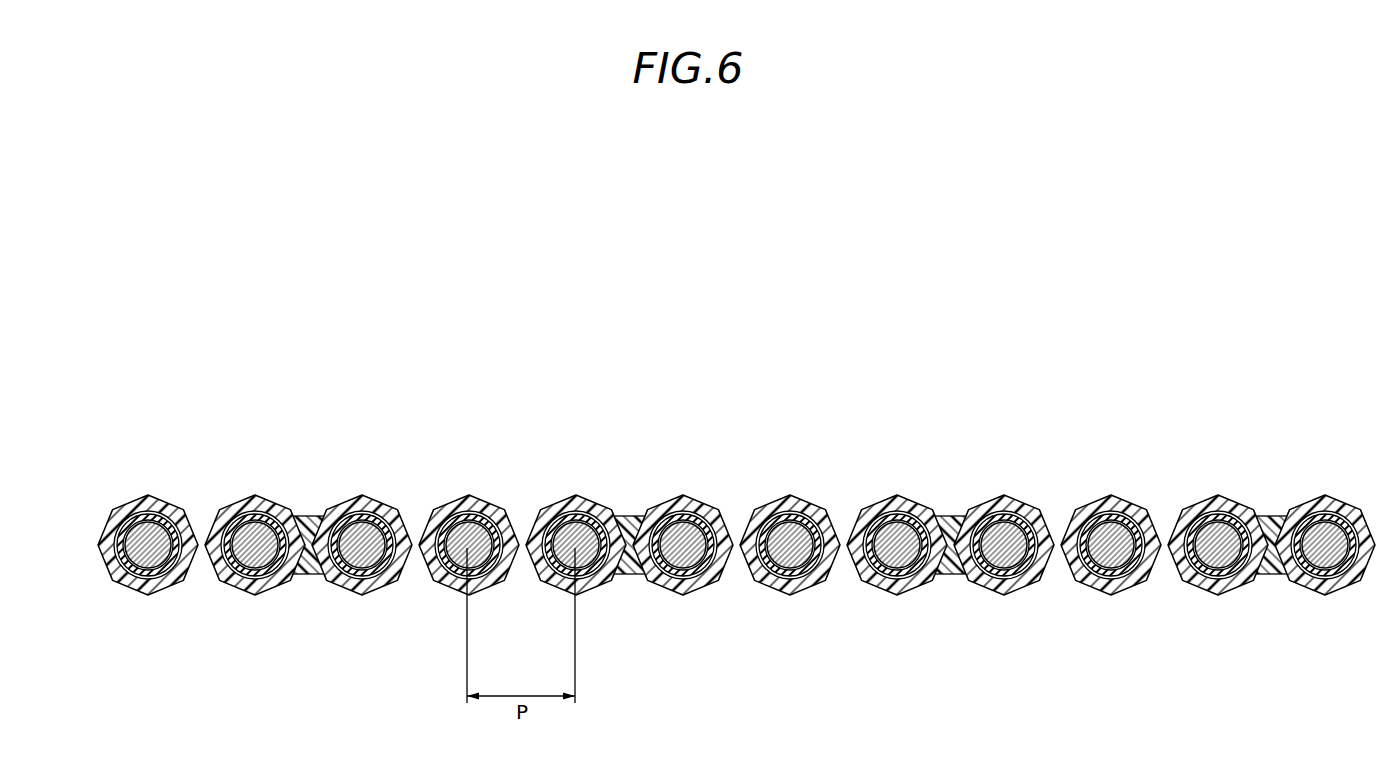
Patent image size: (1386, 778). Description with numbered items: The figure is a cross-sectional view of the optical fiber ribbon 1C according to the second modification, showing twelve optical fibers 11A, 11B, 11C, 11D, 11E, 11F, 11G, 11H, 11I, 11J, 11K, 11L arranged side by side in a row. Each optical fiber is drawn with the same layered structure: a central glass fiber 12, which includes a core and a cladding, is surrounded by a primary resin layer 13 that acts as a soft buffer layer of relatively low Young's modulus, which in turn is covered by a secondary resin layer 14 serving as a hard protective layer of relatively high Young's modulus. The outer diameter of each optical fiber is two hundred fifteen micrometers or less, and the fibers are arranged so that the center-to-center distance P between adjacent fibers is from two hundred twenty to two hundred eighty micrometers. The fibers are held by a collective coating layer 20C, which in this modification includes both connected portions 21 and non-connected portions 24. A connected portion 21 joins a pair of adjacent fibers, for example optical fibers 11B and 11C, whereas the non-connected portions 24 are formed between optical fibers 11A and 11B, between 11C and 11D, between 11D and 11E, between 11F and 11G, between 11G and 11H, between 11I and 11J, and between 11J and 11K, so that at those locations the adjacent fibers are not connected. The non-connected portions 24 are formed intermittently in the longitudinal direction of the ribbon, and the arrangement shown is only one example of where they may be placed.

The optical fiber ribbon 1C is at (996, 330).
The optical fiber 11A is at (158, 505).
The optical fiber 11B is at (260, 504).
The optical fiber 11C is at (367, 504).
The optical fiber 11D is at (472, 504).
The optical fiber 11E is at (583, 504).
The optical fiber 11F is at (687, 504).
The optical fiber 11G is at (800, 504).
The optical fiber 11H is at (905, 505).
The optical fiber 11I is at (1010, 504).
The optical fiber 11J is at (1122, 504).
The optical fiber 11K is at (1225, 504).
The optical fiber 11L is at (1332, 504).
The glass fiber 12 is at (349, 579).
The primary resin layer 13 is at (362, 585).
The secondary resin layer 14 is at (362, 580).
The collective coating layer 20C is at (128, 588).
The connected portion 21 is at (302, 574).
The non-connected portion 24 is at (153, 583).